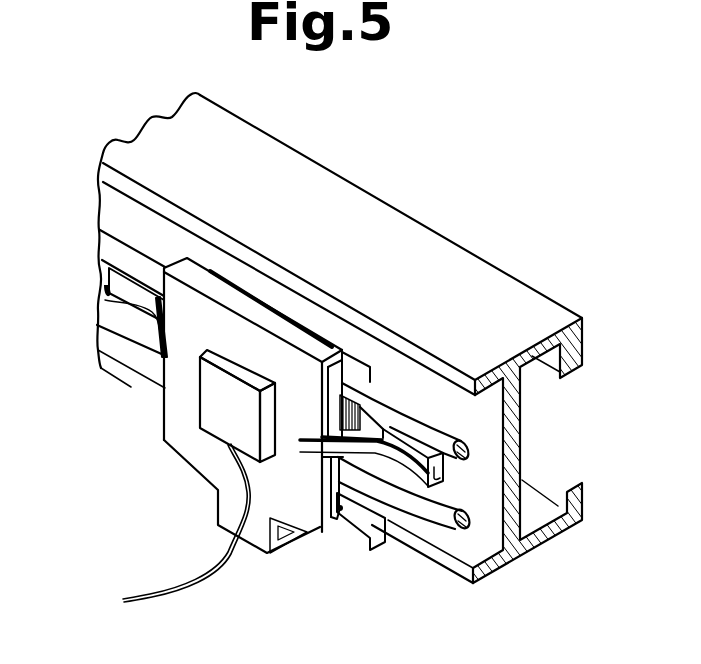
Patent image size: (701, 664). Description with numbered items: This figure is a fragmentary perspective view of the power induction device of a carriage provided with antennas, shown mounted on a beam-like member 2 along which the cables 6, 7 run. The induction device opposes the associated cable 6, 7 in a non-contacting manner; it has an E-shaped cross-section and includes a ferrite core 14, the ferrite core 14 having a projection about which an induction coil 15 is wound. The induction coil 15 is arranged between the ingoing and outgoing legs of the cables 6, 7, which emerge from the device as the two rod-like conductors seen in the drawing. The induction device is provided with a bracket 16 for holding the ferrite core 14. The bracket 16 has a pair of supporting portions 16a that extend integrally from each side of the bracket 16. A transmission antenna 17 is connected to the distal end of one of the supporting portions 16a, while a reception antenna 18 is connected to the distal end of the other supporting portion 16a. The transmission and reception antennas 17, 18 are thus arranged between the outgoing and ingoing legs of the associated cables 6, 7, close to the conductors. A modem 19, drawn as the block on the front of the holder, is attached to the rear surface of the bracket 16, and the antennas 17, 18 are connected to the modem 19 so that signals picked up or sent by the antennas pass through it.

The frame beam 2 is at (380, 220).
The cable 6 is at (470, 462).
The cable 7 is at (468, 532).
The ferrite core 14 is at (348, 358).
The induction coil 15 is at (363, 412).
The bracket 16 is at (165, 423).
The supporting portion 16a is at (162, 310).
The transmission antenna 17 is at (132, 313).
The reception antenna 18 is at (400, 470).
The modem 19 is at (213, 423).